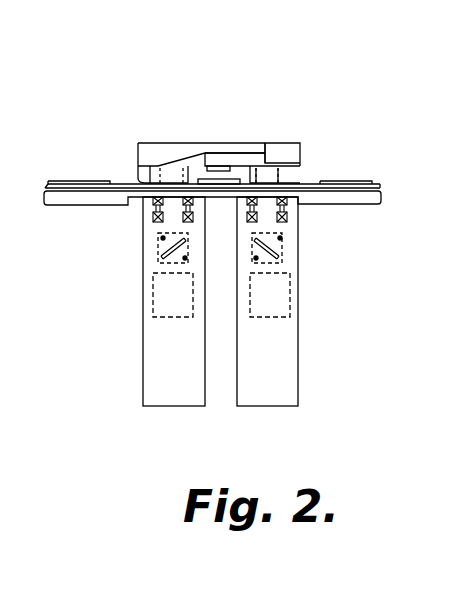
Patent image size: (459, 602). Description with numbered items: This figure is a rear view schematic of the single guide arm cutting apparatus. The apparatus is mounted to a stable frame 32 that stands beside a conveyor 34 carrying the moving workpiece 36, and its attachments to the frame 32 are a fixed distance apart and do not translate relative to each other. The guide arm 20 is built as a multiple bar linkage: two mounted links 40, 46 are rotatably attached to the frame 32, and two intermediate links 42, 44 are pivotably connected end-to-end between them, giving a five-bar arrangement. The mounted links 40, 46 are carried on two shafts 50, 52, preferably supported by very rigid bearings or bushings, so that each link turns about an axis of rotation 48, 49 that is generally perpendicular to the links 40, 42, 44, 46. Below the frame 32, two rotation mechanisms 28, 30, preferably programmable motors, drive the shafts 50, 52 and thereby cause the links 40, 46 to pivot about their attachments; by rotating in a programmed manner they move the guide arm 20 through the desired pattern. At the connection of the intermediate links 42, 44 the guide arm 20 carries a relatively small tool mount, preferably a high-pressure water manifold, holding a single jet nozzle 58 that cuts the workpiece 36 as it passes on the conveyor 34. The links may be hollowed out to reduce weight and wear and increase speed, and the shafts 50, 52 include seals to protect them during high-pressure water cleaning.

The guide arm 20 is at (316, 157).
The rotation mechanism 28 is at (146, 297).
The rotation mechanism 30 is at (304, 272).
The frame 32 is at (136, 220).
The conveyor 34 is at (364, 202).
The workpiece 36 is at (62, 182).
The mounted link 40 is at (138, 178).
The intermediate link 42 is at (162, 148).
The intermediate link 44 is at (233, 153).
The mounted link 46 is at (292, 185).
The axis of rotation 48 is at (175, 165).
The axis of rotation 49 is at (265, 143).
The shaft 50 is at (158, 228).
The shaft 52 is at (283, 233).
The jet nozzle 58 is at (229, 166).